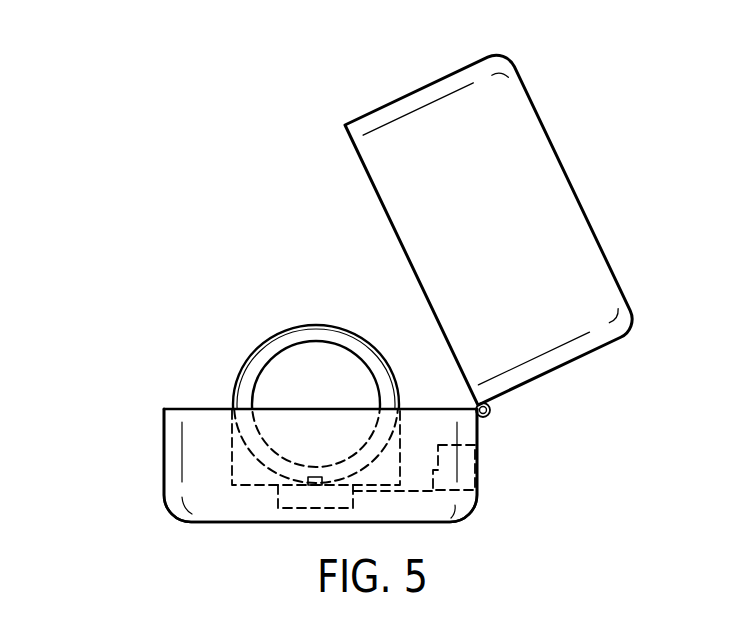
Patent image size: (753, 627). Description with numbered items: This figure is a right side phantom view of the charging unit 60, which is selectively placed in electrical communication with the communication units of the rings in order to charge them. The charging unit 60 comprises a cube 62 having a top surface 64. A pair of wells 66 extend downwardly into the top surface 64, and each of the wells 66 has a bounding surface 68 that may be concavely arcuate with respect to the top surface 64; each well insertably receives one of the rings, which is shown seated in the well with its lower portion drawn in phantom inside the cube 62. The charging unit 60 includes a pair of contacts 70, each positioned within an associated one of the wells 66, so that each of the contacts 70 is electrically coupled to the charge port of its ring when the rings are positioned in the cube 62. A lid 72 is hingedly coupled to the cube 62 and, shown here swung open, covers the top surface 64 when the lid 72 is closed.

The charging unit 60 is at (82, 485).
The cube 62 is at (163, 409).
The top surface 64 is at (218, 408).
The wells 66 is at (315, 462).
The bounding surface 68 is at (379, 487).
The contacts 70 is at (308, 481).
The lid 72 is at (423, 85).